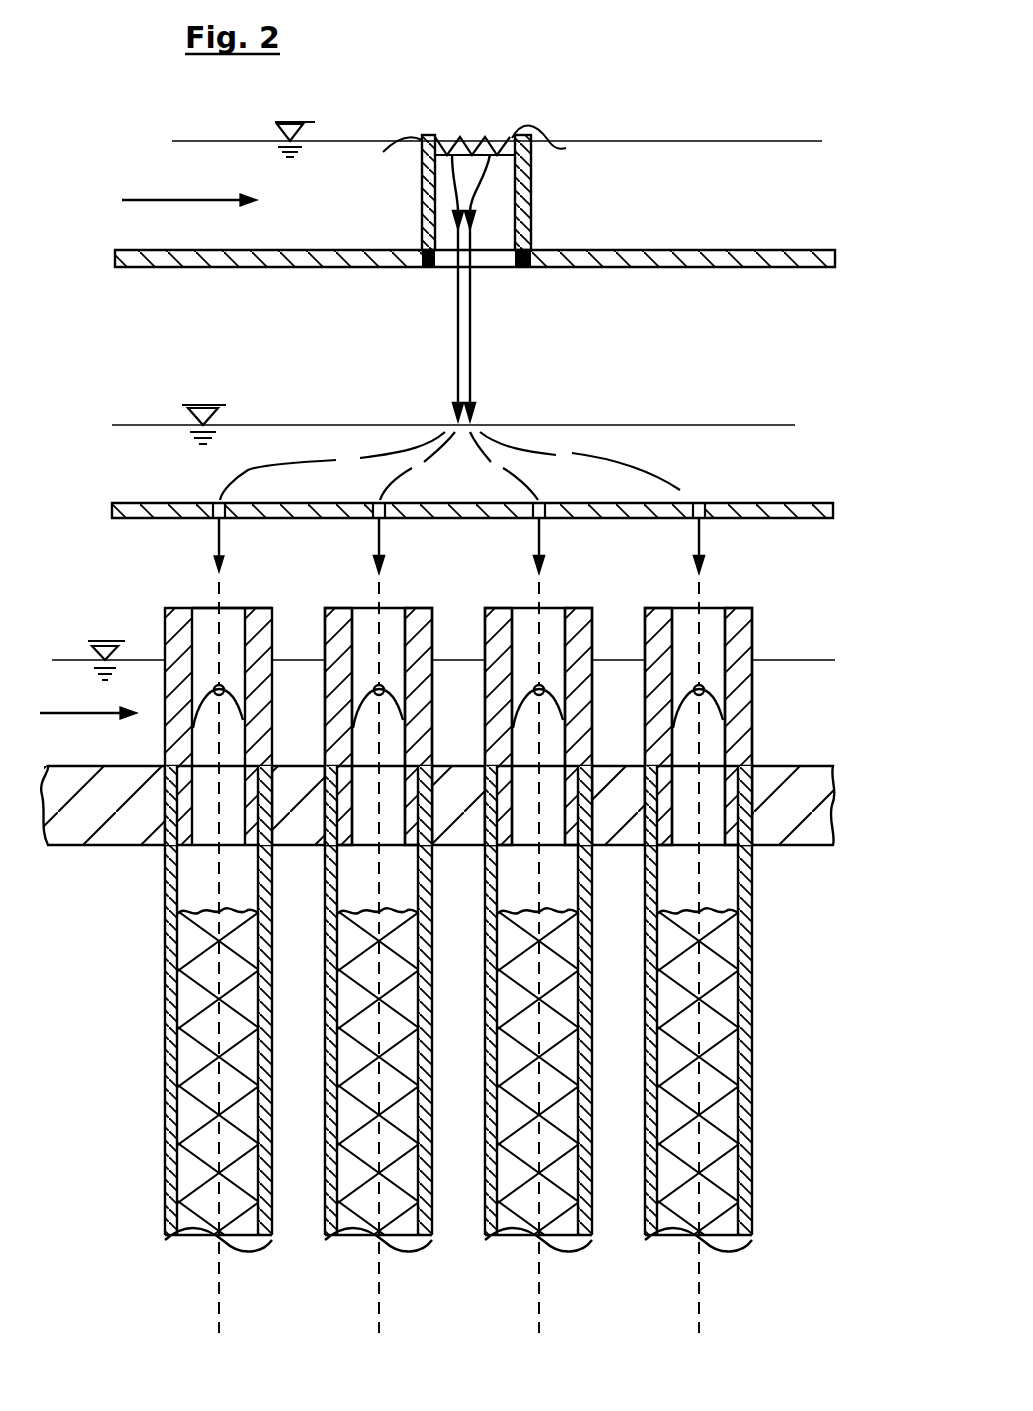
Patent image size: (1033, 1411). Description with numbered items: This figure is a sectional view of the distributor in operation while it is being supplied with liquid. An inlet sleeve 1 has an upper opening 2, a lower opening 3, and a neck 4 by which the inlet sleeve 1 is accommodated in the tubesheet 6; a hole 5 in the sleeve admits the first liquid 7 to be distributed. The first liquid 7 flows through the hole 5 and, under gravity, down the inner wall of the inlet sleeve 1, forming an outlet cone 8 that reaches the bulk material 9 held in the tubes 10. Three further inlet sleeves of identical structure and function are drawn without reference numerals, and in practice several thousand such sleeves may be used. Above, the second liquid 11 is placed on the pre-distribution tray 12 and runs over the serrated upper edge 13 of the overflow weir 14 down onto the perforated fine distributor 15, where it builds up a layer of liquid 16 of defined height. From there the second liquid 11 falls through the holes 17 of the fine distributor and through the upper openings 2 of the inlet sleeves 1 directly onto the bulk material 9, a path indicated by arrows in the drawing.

The inlet sleeve 1 is at (178, 617).
The upper opening 2 is at (240, 607).
The lower opening 3 is at (205, 850).
The neck 4 is at (262, 768).
The hole 5 is at (222, 686).
The tubesheet 6 is at (68, 786).
The first liquid 7 is at (98, 696).
The outlet cone 8 is at (243, 716).
The bulk material 9 is at (188, 937).
The tubes 10 is at (166, 995).
The second liquid 11 is at (219, 203).
The pre-distribution tray 12 is at (772, 260).
The serrated upper edge 13 is at (465, 142).
The overflow weir 14 is at (527, 190).
The perforated fine distributor 15 is at (795, 504).
The layer of liquid 16 is at (740, 460).
The holes 17 is at (215, 523).